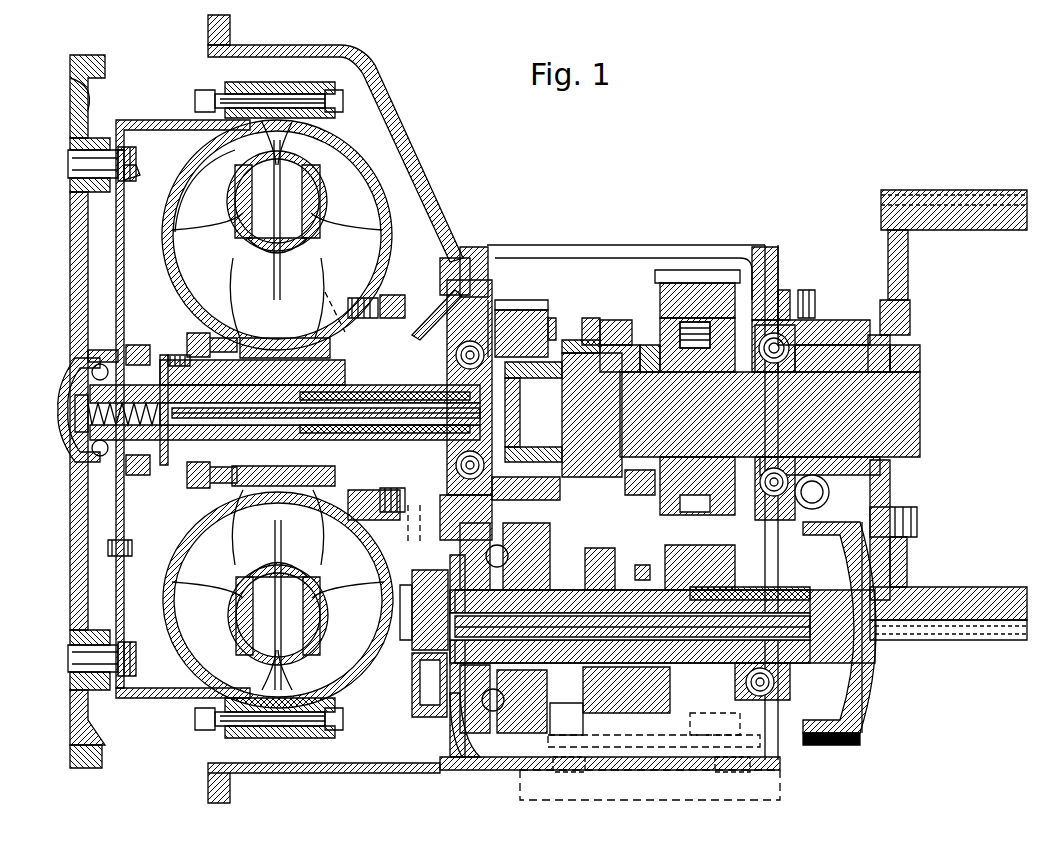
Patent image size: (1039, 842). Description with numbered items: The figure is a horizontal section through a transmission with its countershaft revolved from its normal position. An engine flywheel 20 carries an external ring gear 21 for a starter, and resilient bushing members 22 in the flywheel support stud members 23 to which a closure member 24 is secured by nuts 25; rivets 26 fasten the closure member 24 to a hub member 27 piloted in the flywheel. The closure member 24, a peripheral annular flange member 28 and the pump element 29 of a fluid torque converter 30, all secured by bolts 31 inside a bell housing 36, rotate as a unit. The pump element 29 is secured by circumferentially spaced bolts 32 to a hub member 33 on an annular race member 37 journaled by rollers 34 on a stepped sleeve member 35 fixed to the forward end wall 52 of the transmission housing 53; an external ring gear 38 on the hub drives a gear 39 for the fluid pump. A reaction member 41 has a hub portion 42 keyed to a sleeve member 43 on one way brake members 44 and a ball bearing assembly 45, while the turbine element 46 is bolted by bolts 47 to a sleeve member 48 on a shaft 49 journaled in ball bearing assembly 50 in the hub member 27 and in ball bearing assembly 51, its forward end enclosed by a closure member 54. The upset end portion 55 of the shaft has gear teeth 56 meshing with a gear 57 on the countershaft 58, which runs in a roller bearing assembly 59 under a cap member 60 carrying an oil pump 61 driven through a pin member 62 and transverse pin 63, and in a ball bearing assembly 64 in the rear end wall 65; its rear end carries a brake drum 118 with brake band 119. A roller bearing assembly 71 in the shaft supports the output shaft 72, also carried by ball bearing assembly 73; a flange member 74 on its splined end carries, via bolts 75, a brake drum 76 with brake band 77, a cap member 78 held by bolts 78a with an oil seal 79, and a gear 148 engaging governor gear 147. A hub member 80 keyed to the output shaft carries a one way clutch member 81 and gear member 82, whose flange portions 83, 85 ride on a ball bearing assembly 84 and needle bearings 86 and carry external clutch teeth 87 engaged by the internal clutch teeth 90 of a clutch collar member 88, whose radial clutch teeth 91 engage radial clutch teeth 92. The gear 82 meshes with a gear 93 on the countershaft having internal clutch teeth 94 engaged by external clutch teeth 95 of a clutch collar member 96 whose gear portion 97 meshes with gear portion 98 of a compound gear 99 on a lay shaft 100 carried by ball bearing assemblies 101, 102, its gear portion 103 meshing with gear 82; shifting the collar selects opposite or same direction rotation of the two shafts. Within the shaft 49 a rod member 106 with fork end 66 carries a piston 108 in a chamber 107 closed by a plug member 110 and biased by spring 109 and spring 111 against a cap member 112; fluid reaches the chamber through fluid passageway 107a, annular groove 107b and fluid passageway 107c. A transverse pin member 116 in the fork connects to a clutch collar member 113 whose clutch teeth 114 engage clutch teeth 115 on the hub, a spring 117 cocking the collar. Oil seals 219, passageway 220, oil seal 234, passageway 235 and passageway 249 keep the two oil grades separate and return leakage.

The flywheel 20 is at (70, 228).
The external ring gear 21 is at (102, 755).
The resilient bushing members 22 is at (75, 182).
The stud members 23 is at (82, 160).
The closure member 24 is at (147, 123).
The nuts 25 is at (128, 180).
The rivets 26 is at (125, 556).
The hub member 27 is at (124, 518).
The peripheral annular flange member 28 is at (280, 84).
The pump element 29 is at (357, 185).
The fluid torque converter 30 is at (375, 132).
The bolts 31 is at (318, 95).
The spring 32 is at (355, 298).
The hub member 33 is at (393, 296).
The rollers 34 is at (337, 490).
The stepped sleeve member 35 is at (296, 486).
The bell housing 36 is at (432, 212).
The annular race member 37 is at (390, 512).
The external ring gear 38 is at (450, 515).
The gear 39 is at (418, 520).
The reaction member 41 is at (312, 276).
The hub portion 42 is at (297, 327).
The sleeve member 43 is at (257, 487).
The one way brake members 44 is at (297, 492).
The ball bearing assembly 45 is at (257, 335).
The turbine element 46 is at (205, 180).
The bolts 47 is at (214, 333).
The sleeve member 48 is at (180, 470).
The shaft 49 is at (205, 358).
The ball bearing assembly 50 is at (92, 372).
The ball bearing assembly 51 is at (490, 300).
The forward end wall 52 is at (470, 250).
The transmission housing 53 is at (610, 248).
The closure member 54 is at (65, 430).
The upset end portion 55 is at (552, 318).
The gear teeth 56 is at (534, 298).
The gear 57 is at (545, 560).
The countershaft 58 is at (850, 625).
The roller bearing assembly 59 is at (440, 690).
The cap member 60 is at (412, 603).
The oil pump 61 is at (405, 662).
The pin member 62 is at (488, 633).
The transverse pin 63 is at (500, 605).
The ball bearing assembly 64 is at (758, 668).
The rear end wall 65 is at (765, 250).
The fork end 66 is at (285, 412).
The roller bearing assembly 71 is at (524, 477).
The transmission output shaft 72 is at (912, 392).
The ball bearing assembly 73 is at (788, 335).
The flange member 74 is at (885, 352).
The bolts 75 is at (912, 512).
The brake drum 76 is at (905, 560).
The brake band 77 is at (922, 190).
The cap member 78 is at (825, 322).
The bolts 78a is at (815, 300).
The oil seal 79 is at (908, 315).
The hub member 80 is at (690, 365).
The one way clutch member 81 is at (690, 470).
The gear member 82 is at (685, 285).
The flange portion 83 is at (773, 322).
The ball bearing assembly 84 is at (740, 365).
The flange portion 85 is at (672, 362).
The needle bearings 86 is at (637, 468).
The external clutch teeth 87 is at (645, 362).
The clutch collar member 88 is at (603, 320).
The internal clutch teeth 90 is at (588, 362).
The radial clutch teeth 91 is at (586, 318).
The radial clutch teeth 92 is at (567, 348).
The gear 93 is at (695, 660).
The internal clutch teeth 94 is at (680, 570).
The external clutch teeth 95 is at (640, 565).
The clutch collar member 96 is at (600, 740).
The gear portion 97 is at (598, 548).
The gear portion 98 is at (565, 715).
The compound gear 99 is at (630, 713).
The lay shaft 100 is at (660, 772).
The ball bearing assembly 101 is at (562, 772).
The ball bearing assembly 102 is at (740, 772).
The gear portion 103 is at (695, 722).
The rod member 106 is at (326, 421).
The chamber 107 is at (577, 415).
The fluid passageway 107a is at (521, 333).
The annular groove 107b is at (385, 427).
The fluid passageway 107c is at (428, 330).
The piston 108 is at (533, 382).
The spring 109 is at (540, 444).
The plug member 110 is at (535, 412).
The spring 111 is at (70, 418).
The cap member 112 is at (75, 400).
The clutch collar member 113 is at (160, 358).
The clutch teeth 114 is at (136, 345).
The clutch teeth 115 is at (100, 350).
The transverse pin member 116 is at (150, 470).
The spring 117 is at (178, 352).
The brake drum 118 is at (840, 680).
The brake band 119 is at (845, 745).
The gear 147 is at (812, 457).
The gear 148 is at (812, 372).
The oil seals 219 is at (318, 490).
The passageway 220 is at (452, 338).
The oil seal 234 is at (320, 419).
The passageway 235 is at (385, 396).
The passageway 249 is at (322, 290).